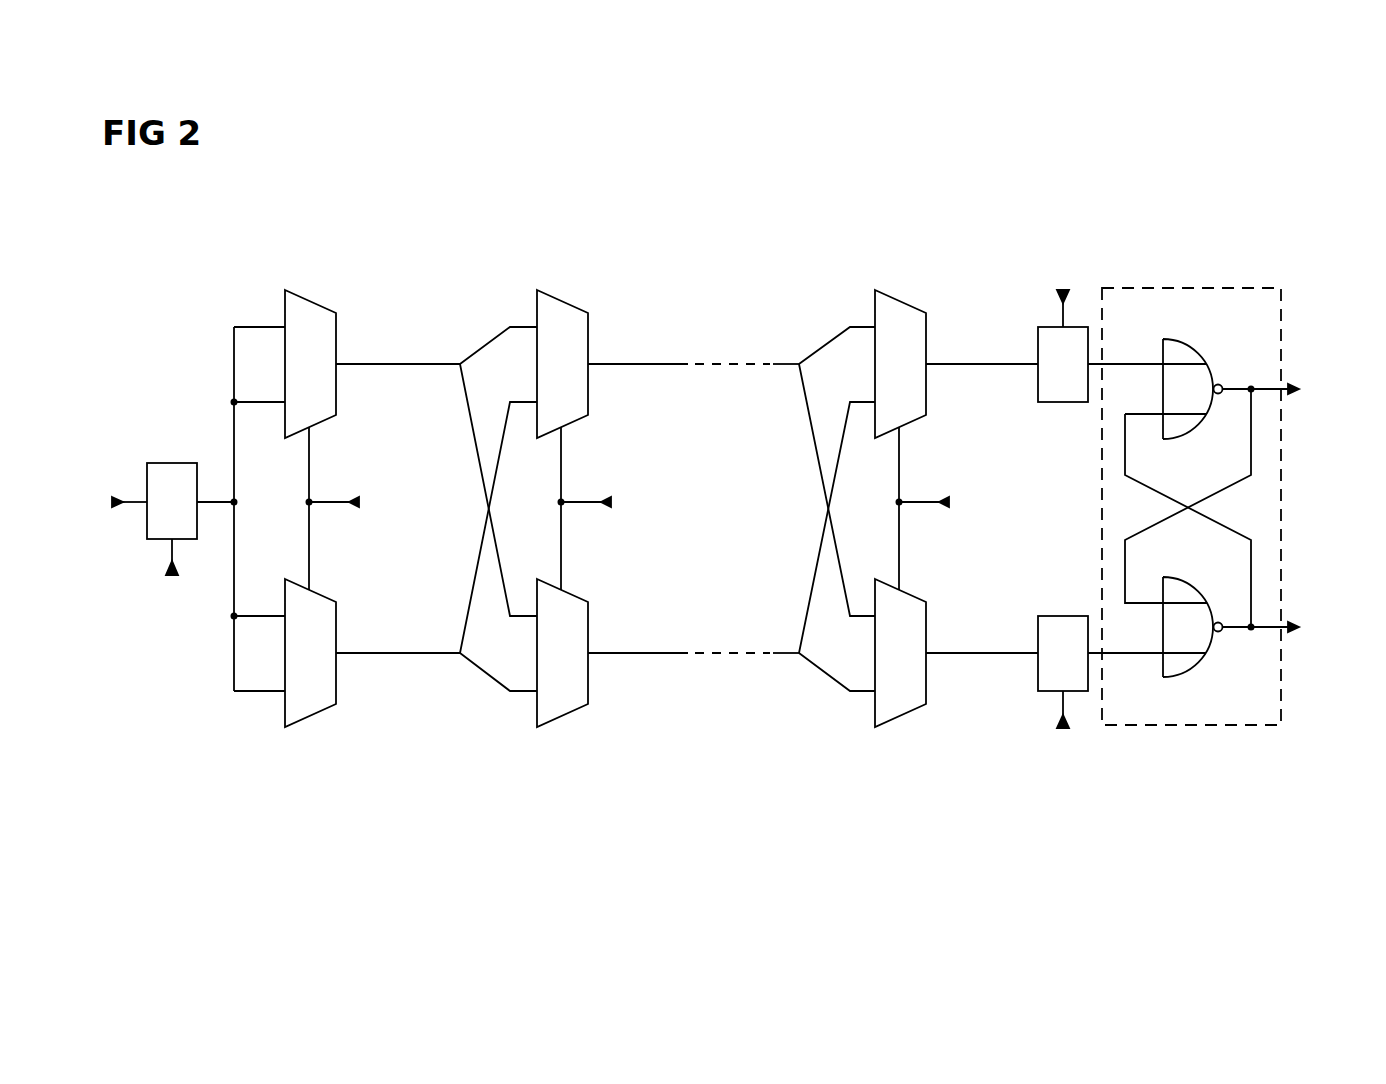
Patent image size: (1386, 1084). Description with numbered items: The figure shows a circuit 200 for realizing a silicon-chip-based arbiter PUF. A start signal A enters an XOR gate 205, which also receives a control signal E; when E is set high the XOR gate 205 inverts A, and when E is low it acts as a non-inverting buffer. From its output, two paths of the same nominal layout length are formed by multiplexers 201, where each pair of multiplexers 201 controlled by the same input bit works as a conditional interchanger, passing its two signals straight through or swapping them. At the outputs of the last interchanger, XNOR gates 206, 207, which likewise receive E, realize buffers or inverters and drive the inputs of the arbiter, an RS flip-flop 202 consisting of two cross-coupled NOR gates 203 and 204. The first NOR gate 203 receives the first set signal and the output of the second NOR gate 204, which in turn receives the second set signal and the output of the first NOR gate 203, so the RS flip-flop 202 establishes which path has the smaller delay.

The circuit 200 is at (1267, 162).
The multiplexers 201 is at (315, 303).
The RS flip-flop 202 is at (1218, 284).
The first NOR gate 203 is at (1193, 338).
The second NOR gate 204 is at (1212, 657).
The XOR gate 205 is at (173, 463).
The XNOR gate 206 is at (1040, 330).
The XNOR gate 207 is at (1040, 620).